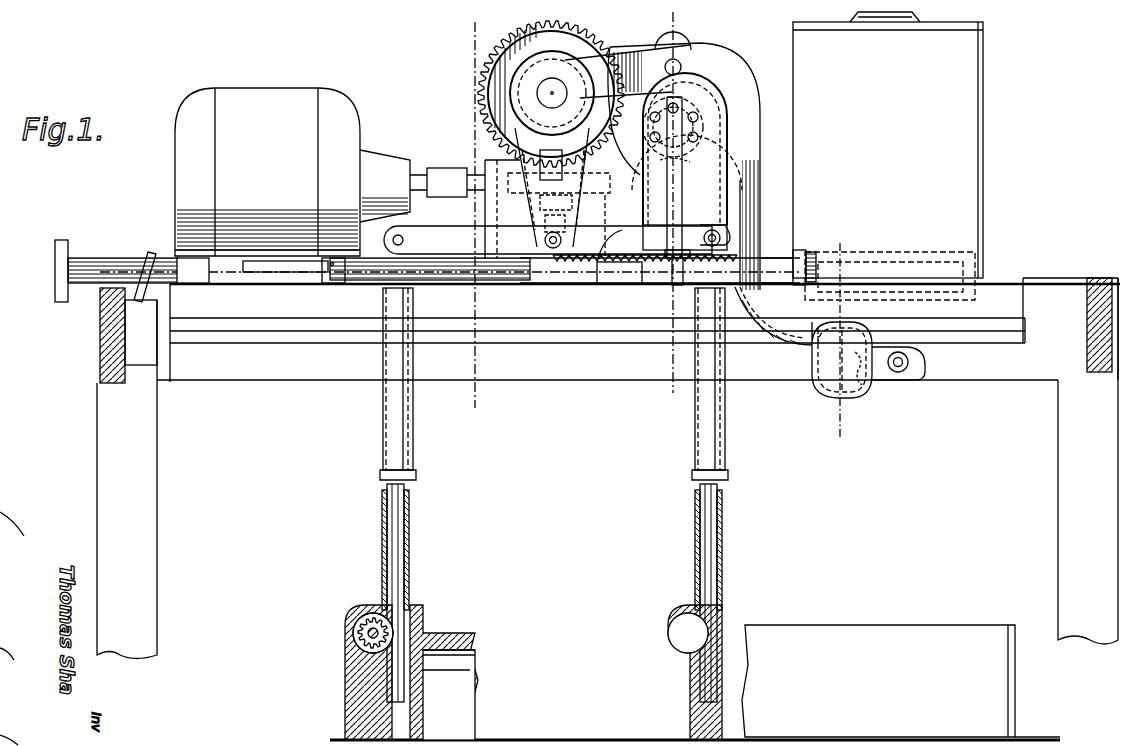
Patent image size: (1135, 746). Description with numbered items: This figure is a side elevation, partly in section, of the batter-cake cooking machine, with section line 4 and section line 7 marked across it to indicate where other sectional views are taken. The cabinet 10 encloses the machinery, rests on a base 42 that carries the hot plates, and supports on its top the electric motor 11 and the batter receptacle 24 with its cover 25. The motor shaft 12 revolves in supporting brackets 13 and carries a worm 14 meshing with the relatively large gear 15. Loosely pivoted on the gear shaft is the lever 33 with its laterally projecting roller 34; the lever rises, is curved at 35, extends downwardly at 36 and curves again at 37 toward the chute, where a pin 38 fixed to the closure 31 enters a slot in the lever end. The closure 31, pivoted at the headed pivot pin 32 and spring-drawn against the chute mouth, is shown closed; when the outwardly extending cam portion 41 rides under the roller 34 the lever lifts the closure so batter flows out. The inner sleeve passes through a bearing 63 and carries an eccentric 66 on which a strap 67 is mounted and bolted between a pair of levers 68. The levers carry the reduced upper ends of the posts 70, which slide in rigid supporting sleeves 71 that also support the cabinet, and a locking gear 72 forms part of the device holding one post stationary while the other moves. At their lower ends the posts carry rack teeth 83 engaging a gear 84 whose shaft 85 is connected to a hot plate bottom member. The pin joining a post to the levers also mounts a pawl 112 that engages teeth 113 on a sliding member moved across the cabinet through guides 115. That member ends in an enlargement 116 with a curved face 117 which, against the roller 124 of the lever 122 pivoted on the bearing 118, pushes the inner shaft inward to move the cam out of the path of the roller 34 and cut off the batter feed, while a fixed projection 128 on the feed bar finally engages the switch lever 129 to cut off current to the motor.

The section line 4- 4 is at (470, 22).
The section line 7- 7 is at (671, 22).
The cabinet 10 is at (992, 355).
The electric motor 11 is at (238, 100).
The shaft 12 is at (415, 167).
The supporting brackets 13 is at (486, 165).
The worm 14 is at (427, 271).
The gear 15 is at (517, 46).
The batter receptacle 24 is at (888, 161).
The cover 25 is at (872, 28).
The closure 31 is at (812, 385).
The headed pivot pin 32 is at (898, 374).
The lever 33 is at (644, 58).
The roller 34 is at (680, 46).
The curved portion of lever 35 is at (740, 72).
The downwardly extending portion of lever 36 is at (752, 195).
The lower curved portion of lever 37 is at (773, 329).
The pin 38 is at (858, 395).
The cam portion 41 is at (748, 84).
The base 42 is at (878, 681).
The bearing 63 is at (540, 96).
The eccentric 66 is at (522, 78).
The strap 67 is at (522, 210).
The levers 68 is at (442, 235).
The posts 70 is at (392, 546).
The supporting sleeves 71 is at (414, 550).
The gear 72 is at (372, 672).
The rack teeth 83 is at (692, 680).
The gear 84 is at (362, 612).
The shaft 85 is at (355, 633).
The pawl 112 is at (628, 242).
The teeth 113 is at (660, 276).
The guides 115 is at (331, 272).
The enlargement 116 is at (812, 252).
The curved portion 117 is at (798, 278).
The bearing 118 is at (722, 130).
The lever 122 is at (708, 175).
The roller 124 is at (683, 280).
The fixed projection 128 is at (272, 270).
The switch lever 129 is at (150, 262).